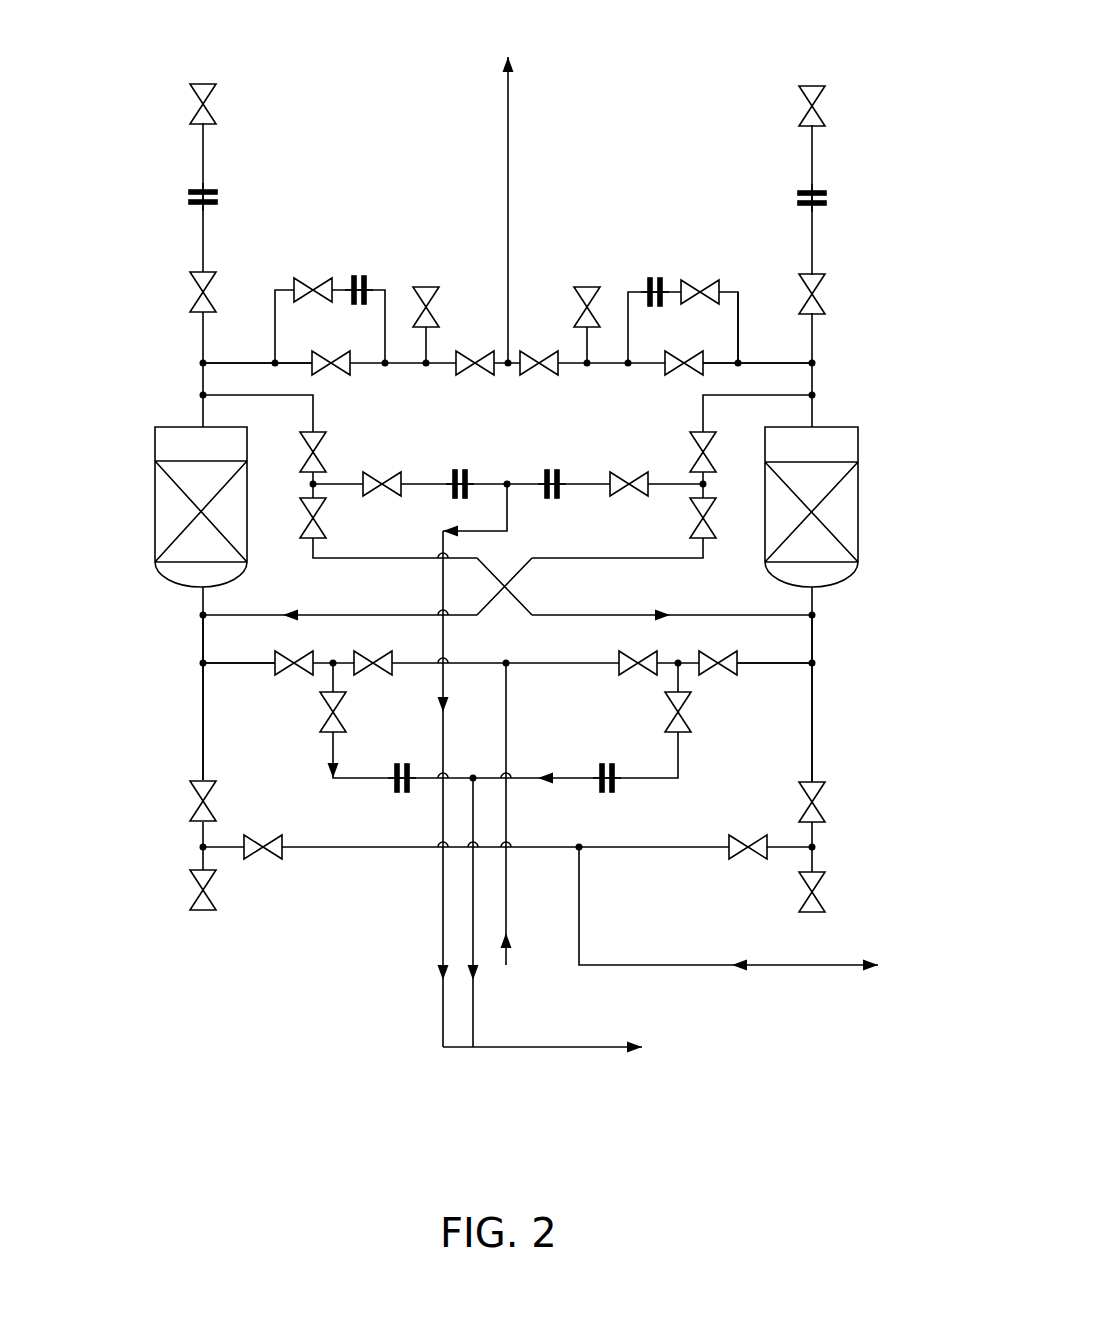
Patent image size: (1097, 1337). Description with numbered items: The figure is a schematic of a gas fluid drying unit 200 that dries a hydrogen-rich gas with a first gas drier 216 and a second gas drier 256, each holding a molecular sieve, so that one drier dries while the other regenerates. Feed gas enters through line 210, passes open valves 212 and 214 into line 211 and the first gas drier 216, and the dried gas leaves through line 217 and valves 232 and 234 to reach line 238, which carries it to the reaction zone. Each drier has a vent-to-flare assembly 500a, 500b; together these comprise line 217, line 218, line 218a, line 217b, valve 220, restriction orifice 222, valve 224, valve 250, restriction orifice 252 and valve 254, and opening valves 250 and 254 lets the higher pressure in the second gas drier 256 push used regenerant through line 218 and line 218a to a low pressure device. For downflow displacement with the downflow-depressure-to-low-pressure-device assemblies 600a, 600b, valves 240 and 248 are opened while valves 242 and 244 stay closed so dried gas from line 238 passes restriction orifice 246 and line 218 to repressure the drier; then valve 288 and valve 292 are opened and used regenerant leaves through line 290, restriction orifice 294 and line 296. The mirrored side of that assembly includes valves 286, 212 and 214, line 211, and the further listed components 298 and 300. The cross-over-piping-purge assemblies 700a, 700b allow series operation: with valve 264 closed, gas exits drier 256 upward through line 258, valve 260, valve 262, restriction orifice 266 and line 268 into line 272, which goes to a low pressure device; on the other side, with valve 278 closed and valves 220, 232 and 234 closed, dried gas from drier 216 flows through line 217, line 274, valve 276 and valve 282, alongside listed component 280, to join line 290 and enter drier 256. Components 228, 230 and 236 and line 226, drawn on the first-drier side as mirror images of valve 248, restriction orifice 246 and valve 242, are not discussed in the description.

The gas fluid drying unit 200 is at (840, 55).
The valve 254 is at (190, 113).
The vent-to-flare assembly 500a is at (149, 178).
The restriction orifice 252 is at (188, 196).
The valve 250 is at (190, 294).
The line 218a is at (200, 338).
The line 218 is at (200, 383).
The line 258 is at (238, 396).
The valve 248 is at (320, 279).
The restriction orifice 246 is at (365, 277).
The valve 242 is at (434, 285).
The valve 236 is at (581, 285).
The rupture disc 230 is at (649, 276).
The valve 228 is at (708, 280).
The line 238 is at (510, 193).
The valve 240 is at (480, 352).
The valve 234 is at (534, 352).
The valve 244 is at (338, 377).
The valve 232 is at (672, 377).
The conduit 226 is at (740, 335).
The line 217b is at (814, 338).
The line 217 is at (814, 383).
The valve 220 is at (823, 283).
The restriction orifice 222 is at (828, 193).
The valve 224 is at (822, 110).
The vent-to-flare assembly 500b is at (857, 180).
The line 274 is at (735, 392).
The cross-over-piping-purge assembly 700a is at (301, 467).
The cross-over-piping-purge assembly 700b is at (716, 468).
The valve 260 is at (325, 441).
The valve 264 is at (325, 523).
The valve 276 is at (690, 444).
The valve 282 is at (692, 513).
The valve 262 is at (391, 478).
The restriction orifice 266 is at (464, 468).
The cross-over-piping-purge assembly component 280 is at (552, 468).
The valve 278 is at (621, 478).
The line 268 is at (509, 517).
The second gas drier 256 is at (153, 507).
The first gas drier 216 is at (860, 513).
The line 290 is at (200, 640).
The valve 288 is at (284, 650).
The valve 286 is at (364, 650).
The valve 212 is at (628, 653).
The valve 214 is at (728, 653).
The line 211 is at (778, 668).
The downflow-depressure-to-low-pressure-device assembly 600a is at (341, 748).
The valve 292 is at (320, 724).
The restriction orifice 294 is at (394, 790).
The downflow-depressure-to-low-pressure-device assembly 600b is at (632, 747).
The downflow-depressure assembly component 298 is at (688, 716).
The downflow-depressure assembly component 300 is at (612, 790).
The line 210 is at (508, 734).
The line 296 is at (475, 1023).
The line 272 is at (586, 1044).